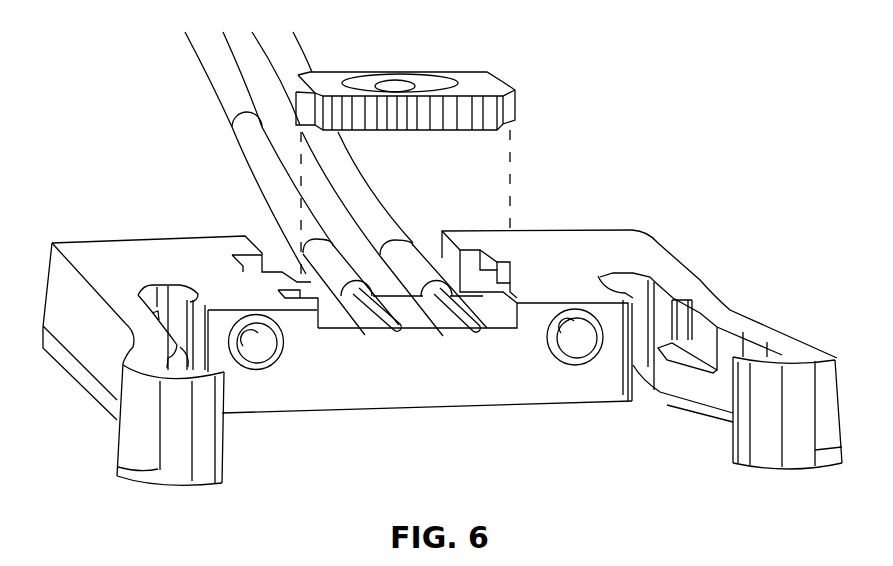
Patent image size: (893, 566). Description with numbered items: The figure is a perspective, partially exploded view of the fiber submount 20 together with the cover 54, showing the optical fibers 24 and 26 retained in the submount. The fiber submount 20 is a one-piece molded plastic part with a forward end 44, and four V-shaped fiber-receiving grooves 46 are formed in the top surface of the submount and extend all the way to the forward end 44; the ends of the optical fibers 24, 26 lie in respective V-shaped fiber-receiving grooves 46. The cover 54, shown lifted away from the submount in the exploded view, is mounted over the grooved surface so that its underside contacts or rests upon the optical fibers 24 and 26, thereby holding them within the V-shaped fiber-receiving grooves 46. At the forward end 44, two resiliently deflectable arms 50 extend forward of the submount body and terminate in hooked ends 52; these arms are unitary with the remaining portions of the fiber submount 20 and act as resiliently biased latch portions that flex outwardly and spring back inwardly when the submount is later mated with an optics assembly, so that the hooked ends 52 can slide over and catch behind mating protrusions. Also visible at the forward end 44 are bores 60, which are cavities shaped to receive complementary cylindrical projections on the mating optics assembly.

The fiber submount 20 is at (720, 252).
The optical fiber 24 is at (480, 332).
The optical fiber 26 is at (396, 330).
The forward end 44 is at (295, 392).
The V-shaped fiber-receiving groove 46 is at (362, 333).
The resiliently deflectable arm 50 is at (115, 453).
The hooked end 52 is at (222, 473).
The cover 54 is at (473, 73).
The bore 60 is at (255, 347).